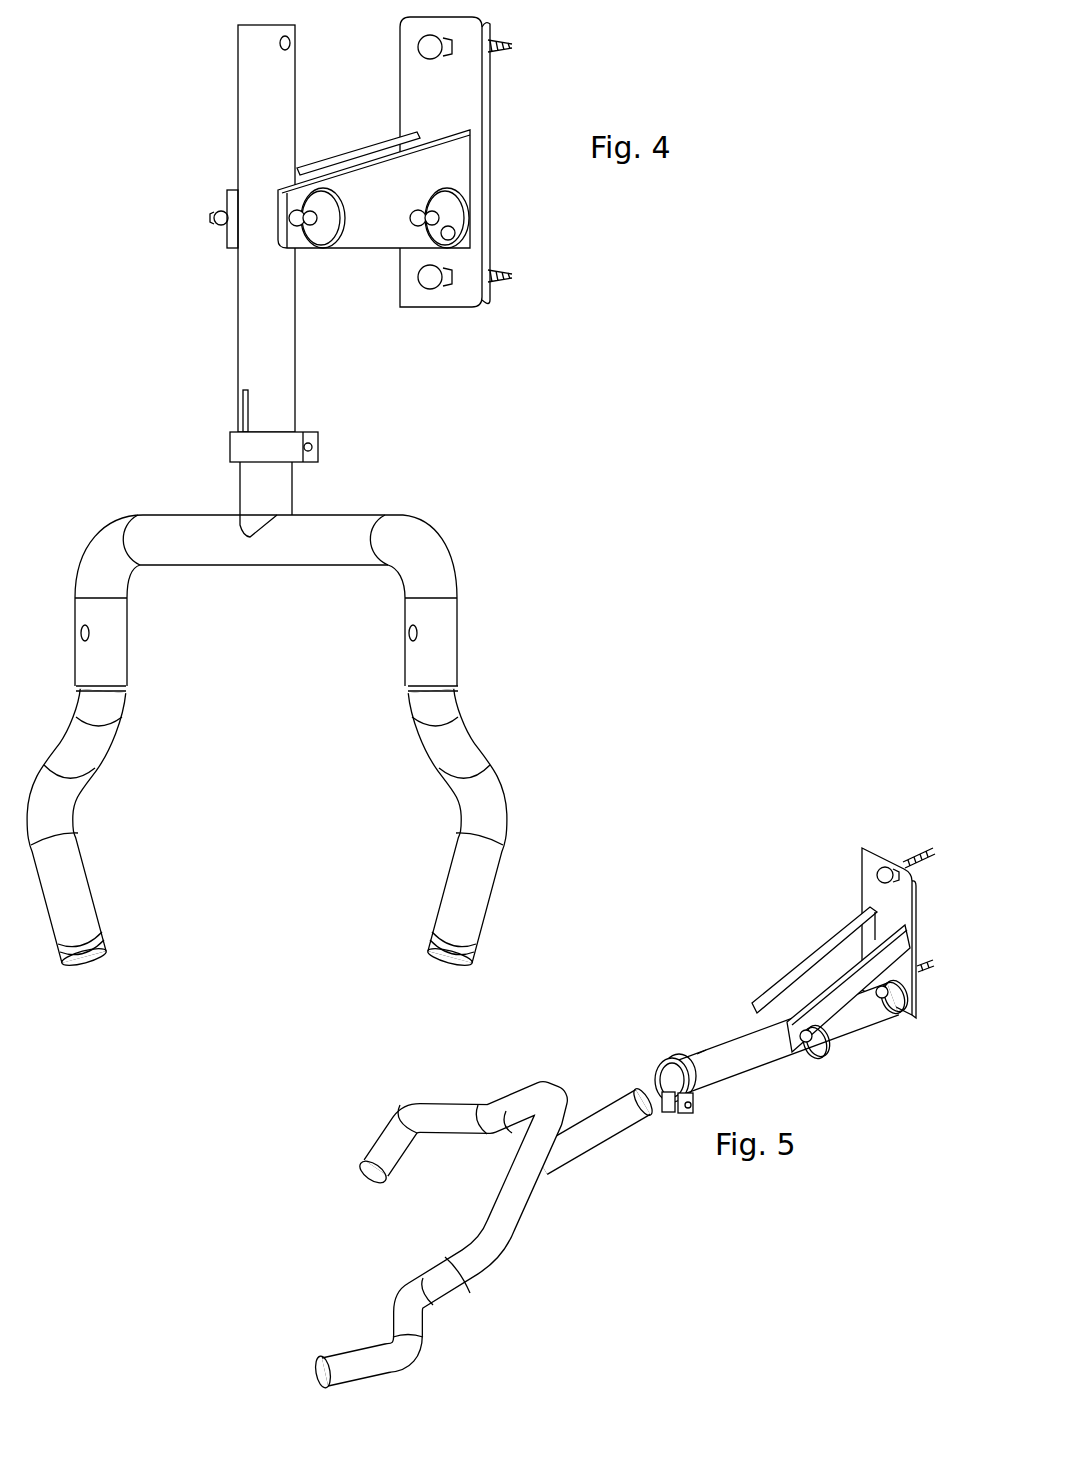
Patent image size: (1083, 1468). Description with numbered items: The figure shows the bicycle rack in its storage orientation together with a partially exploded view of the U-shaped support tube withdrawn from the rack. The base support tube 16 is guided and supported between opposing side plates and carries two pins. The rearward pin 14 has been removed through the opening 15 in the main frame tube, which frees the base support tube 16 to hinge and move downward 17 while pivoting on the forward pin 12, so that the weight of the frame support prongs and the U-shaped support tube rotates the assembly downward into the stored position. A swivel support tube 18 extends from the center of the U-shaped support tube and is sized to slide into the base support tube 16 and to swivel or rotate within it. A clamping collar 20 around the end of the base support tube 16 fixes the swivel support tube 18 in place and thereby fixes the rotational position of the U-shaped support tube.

In FIG. 4, the forward pin 12 is at (300, 226).
In FIG. 4, the rearward pin 14 is at (423, 226).
In FIG. 4, the opening 15 is at (280, 47).
In FIG. 4, the base support tube 16 is at (238, 305).
In FIG. 5, the base support tube 16 is at (742, 1033).
In FIG. 4, the downward movement 17 is at (207, 205).
In FIG. 5, the swivel support tube 18 is at (618, 1093).
In FIG. 5, the clamping collar 20 is at (672, 1060).